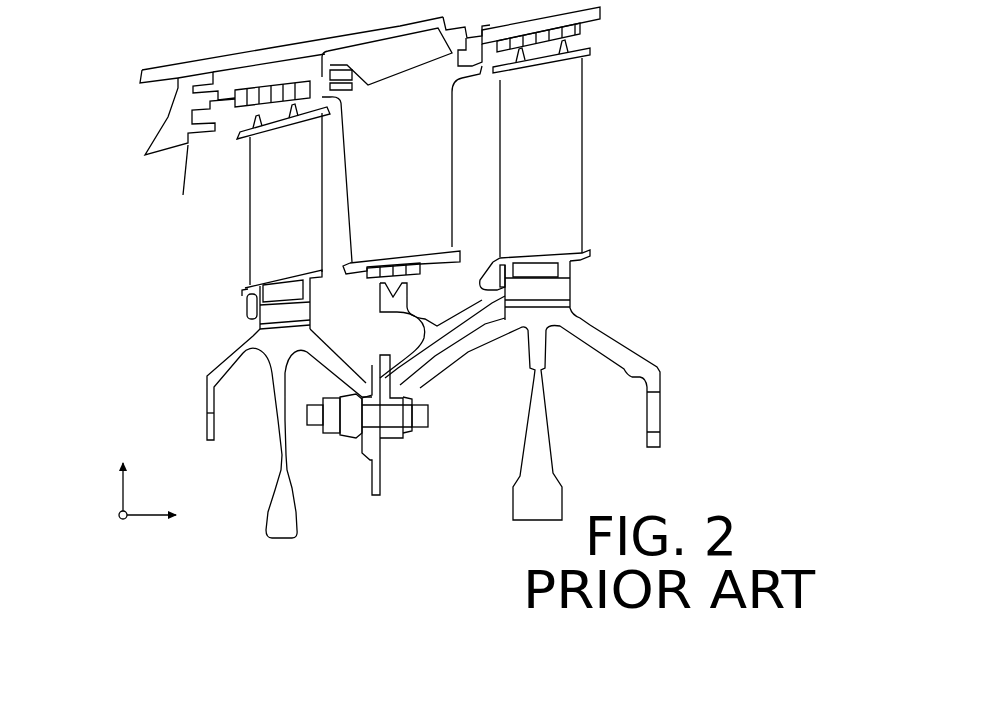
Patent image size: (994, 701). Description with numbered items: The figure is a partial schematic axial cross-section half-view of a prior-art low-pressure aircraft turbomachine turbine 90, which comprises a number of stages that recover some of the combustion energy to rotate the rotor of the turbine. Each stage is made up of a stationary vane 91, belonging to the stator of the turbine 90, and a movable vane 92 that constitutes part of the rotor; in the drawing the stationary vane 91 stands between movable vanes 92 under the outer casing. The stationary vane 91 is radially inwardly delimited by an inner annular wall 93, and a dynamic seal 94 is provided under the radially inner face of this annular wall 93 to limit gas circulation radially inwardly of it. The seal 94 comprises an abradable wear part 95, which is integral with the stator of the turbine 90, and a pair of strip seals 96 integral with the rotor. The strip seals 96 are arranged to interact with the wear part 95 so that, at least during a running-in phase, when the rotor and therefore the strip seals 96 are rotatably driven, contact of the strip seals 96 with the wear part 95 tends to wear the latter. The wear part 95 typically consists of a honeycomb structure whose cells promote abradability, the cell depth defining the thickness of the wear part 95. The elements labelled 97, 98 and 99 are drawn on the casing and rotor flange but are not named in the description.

The turbine 90 is at (115, 285).
The stationary vane 91 is at (457, 118).
The movable vane 92 is at (582, 142).
The inner annular wall 93 is at (401, 250).
The dynamic seal 94 is at (163, 282).
The abradable wear part 95 is at (358, 284).
The strip seals 96 is at (367, 303).
The shroud segment 97 is at (232, 117).
The turbine casing 98 is at (598, 37).
The bolted flange joint 99 is at (398, 458).